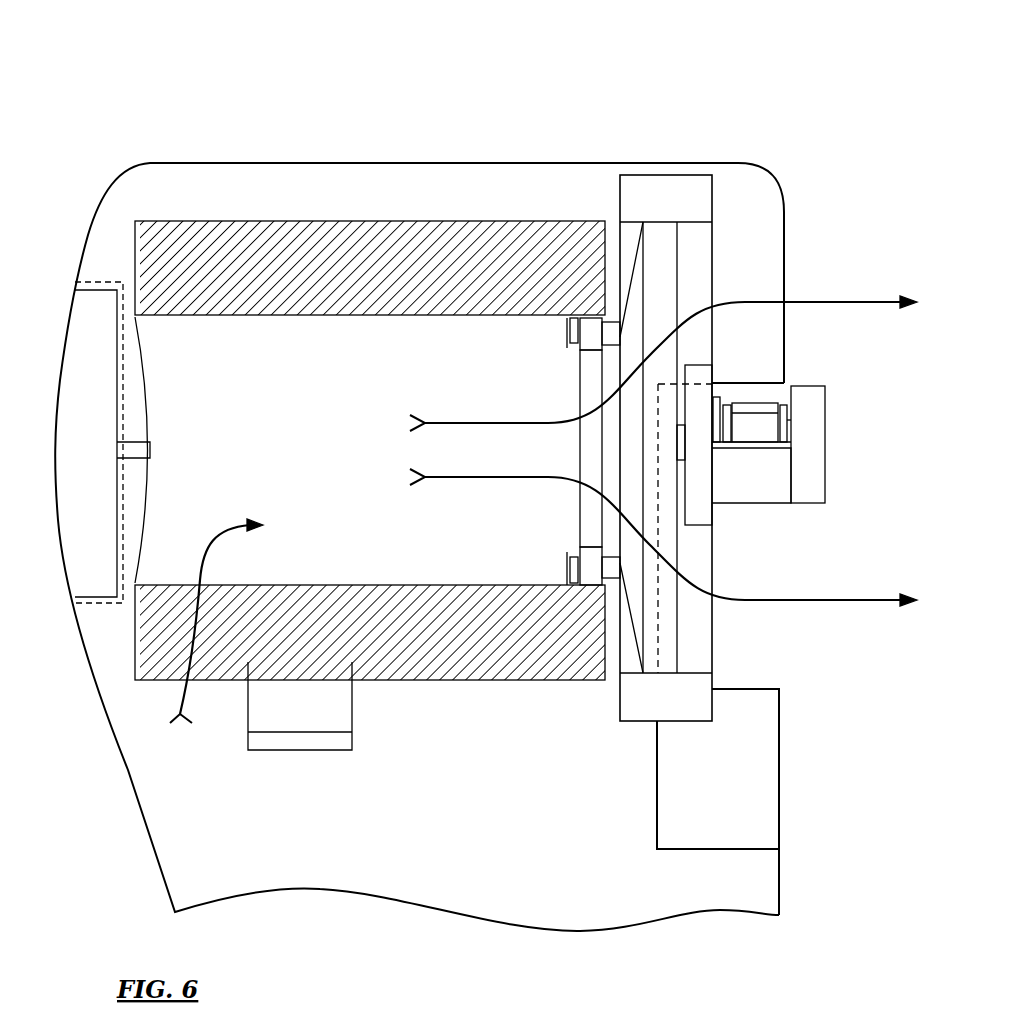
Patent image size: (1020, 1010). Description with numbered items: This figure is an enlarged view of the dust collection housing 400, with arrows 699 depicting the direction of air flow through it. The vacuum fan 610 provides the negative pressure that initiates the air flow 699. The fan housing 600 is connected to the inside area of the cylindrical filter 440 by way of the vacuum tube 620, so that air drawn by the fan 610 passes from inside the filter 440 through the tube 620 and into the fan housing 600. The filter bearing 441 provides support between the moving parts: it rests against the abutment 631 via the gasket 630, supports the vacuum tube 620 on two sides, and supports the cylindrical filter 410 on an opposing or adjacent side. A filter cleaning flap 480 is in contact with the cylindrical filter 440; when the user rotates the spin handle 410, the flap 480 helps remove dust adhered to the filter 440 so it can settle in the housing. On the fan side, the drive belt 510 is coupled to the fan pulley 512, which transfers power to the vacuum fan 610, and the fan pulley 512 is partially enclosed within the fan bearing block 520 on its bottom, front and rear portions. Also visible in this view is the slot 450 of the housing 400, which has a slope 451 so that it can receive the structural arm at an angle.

The dust collection housing 400 is at (481, 86).
The spin handle 410 is at (88, 320).
The cylindrical filter 440 is at (428, 668).
The filter bearing 441 is at (593, 340).
The slot 450 is at (732, 622).
The slope 451 is at (752, 783).
The filter cleaning flap 480 is at (265, 720).
The drive belt 510 is at (775, 402).
The fan pulley 512 is at (760, 427).
The fan bearing block 520 is at (810, 503).
The fan housing 600 is at (710, 666).
The vacuum fan 610 is at (663, 265).
The vacuum tube 620 is at (597, 452).
The gasket 630 is at (572, 595).
The abutment 631 is at (568, 330).
The air flow 699 is at (473, 421).